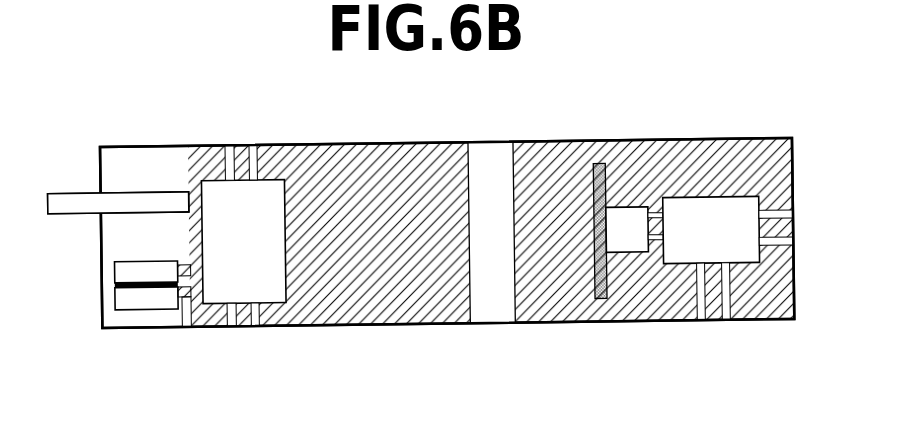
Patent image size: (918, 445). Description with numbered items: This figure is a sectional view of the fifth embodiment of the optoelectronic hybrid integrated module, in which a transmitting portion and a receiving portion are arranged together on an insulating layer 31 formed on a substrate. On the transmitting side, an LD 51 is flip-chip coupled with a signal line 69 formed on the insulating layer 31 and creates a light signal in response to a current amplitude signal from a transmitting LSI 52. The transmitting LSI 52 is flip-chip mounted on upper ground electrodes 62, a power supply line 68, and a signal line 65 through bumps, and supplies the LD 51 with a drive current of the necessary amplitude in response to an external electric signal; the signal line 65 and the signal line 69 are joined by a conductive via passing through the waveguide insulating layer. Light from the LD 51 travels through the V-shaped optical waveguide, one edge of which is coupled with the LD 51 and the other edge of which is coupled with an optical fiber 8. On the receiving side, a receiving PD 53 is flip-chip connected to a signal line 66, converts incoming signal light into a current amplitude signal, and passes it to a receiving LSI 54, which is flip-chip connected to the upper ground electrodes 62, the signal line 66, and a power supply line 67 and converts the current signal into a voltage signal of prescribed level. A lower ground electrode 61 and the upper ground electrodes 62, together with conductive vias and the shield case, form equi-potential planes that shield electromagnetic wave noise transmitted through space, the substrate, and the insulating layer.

The optical fiber 8 is at (65, 193).
The insulating layer 31 is at (128, 322).
The LD 51 is at (121, 292).
The transmitting LSI 52 is at (272, 194).
The receiving PD 53 is at (622, 229).
The receiving LSI 54 is at (717, 220).
The lower ground electrode 61 is at (182, 264).
The upper ground electrode 62 is at (525, 313).
The signal line 65 is at (226, 149).
The signal line 66 is at (781, 249).
The power supply line 67 is at (688, 308).
The power supply line 68 is at (260, 328).
The signal line 69 is at (179, 327).